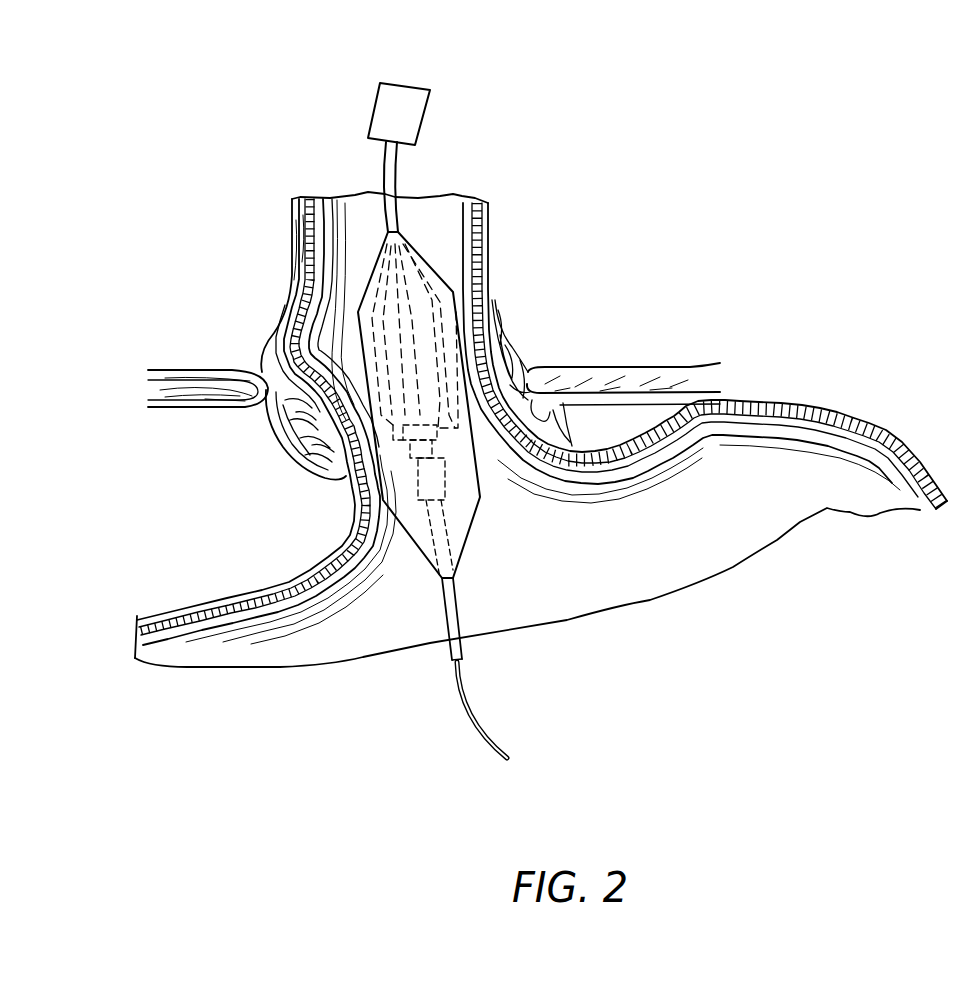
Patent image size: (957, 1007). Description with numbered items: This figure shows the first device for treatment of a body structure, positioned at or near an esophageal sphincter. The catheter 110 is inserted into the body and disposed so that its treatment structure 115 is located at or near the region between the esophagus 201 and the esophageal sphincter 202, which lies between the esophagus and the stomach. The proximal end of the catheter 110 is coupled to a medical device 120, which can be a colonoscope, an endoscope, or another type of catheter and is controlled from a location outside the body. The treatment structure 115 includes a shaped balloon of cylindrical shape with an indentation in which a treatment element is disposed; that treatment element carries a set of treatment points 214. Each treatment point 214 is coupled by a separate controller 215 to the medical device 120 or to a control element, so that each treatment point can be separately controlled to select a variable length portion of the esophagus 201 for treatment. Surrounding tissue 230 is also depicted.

The catheter 110 is at (364, 159).
The medical device 120 is at (356, 89).
The treatment points 214 is at (423, 322).
The controller 215 is at (408, 442).
The treatment structure 115 is at (462, 335).
The esophagus 201 is at (303, 290).
The esophageal sphincter 202 is at (534, 350).
The tissue 230 is at (673, 592).